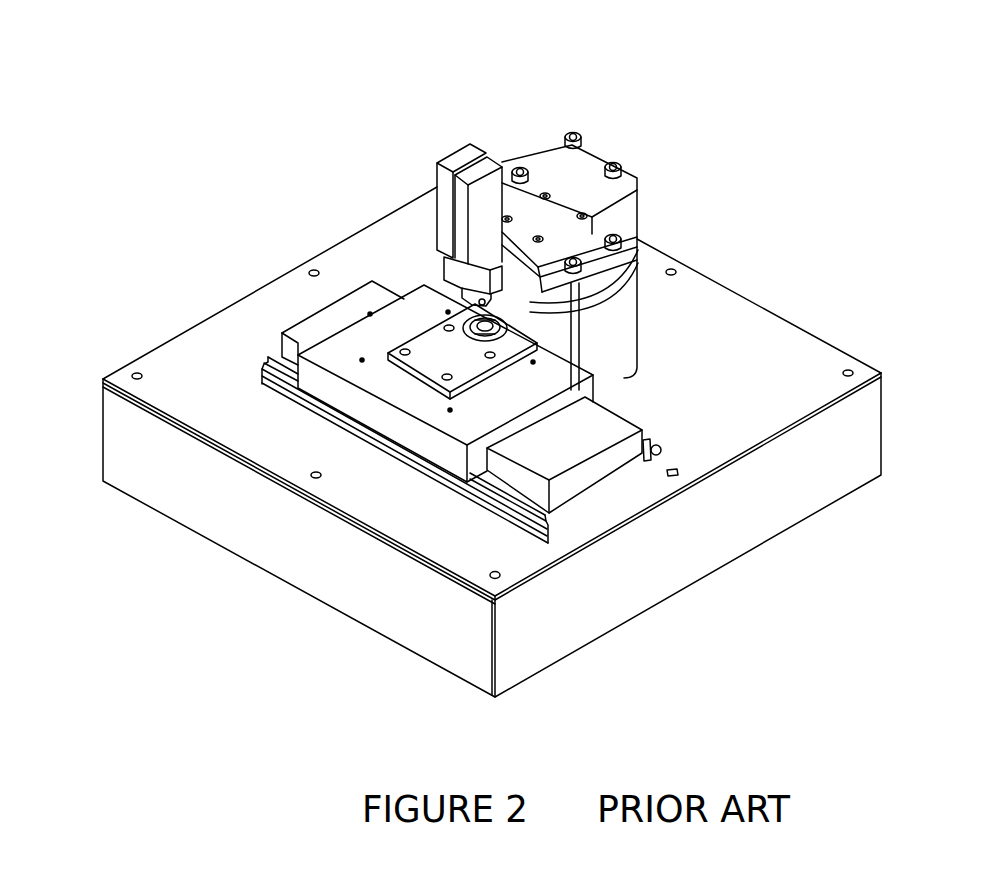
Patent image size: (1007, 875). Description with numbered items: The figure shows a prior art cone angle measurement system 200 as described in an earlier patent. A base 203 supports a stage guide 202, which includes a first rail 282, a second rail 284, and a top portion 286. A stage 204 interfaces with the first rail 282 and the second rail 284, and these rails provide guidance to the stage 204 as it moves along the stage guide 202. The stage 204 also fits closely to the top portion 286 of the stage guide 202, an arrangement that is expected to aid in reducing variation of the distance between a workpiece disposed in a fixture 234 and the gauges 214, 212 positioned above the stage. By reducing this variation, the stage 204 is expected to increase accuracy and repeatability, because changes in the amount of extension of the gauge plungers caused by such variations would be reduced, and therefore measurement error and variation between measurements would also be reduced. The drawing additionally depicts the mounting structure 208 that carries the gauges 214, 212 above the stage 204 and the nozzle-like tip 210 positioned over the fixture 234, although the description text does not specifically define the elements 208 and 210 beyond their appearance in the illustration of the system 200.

The system 200 is at (568, 113).
The stage guide 202 is at (282, 333).
The base 203 is at (122, 488).
The stage 204 is at (378, 301).
The dispenser mounting bracket 208 is at (490, 306).
The dispensing nozzle 210 is at (462, 296).
The gauge 212 is at (437, 163).
The gauge 214 is at (495, 158).
The fixture 234 is at (517, 340).
The first rail 282 is at (652, 456).
The second rail 284 is at (548, 508).
The top portion 286 is at (556, 450).